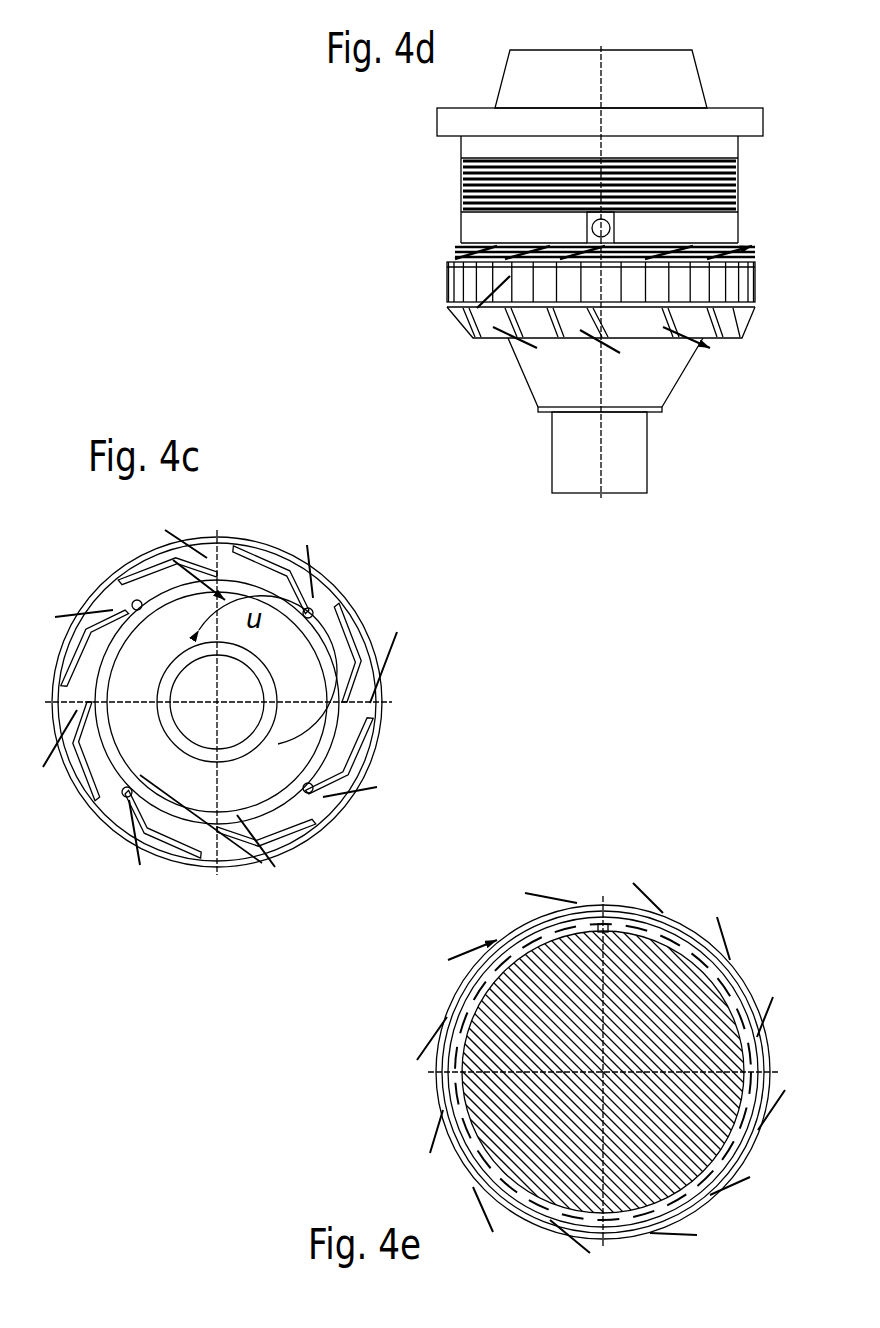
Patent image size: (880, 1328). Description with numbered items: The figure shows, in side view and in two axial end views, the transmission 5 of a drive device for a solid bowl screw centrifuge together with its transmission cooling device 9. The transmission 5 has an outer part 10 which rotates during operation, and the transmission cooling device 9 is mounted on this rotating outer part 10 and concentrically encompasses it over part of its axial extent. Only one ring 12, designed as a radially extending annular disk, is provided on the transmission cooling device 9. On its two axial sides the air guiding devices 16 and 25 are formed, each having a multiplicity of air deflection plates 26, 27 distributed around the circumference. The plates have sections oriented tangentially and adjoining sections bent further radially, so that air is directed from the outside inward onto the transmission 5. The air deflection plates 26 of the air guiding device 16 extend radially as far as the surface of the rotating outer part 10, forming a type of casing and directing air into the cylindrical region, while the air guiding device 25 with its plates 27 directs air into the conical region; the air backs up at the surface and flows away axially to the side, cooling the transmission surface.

In FIG. 4D, the transmission 5 is at (739, 222).
In FIG. 4E, the transmission 5 is at (665, 990).
In FIG. 4D, the transmission cooling device 9 is at (593, 325).
In FIG. 4D, the outer part 10 is at (738, 188).
In FIG. 4D, the ring 12 is at (755, 304).
In FIG. 4D, the air guiding device 16 is at (462, 330).
In FIG. 4E, the air guiding device 16 is at (620, 912).
In FIG. 4D, the air guiding device 25 is at (488, 340).
In FIG. 4C, the air guiding device 25 is at (306, 608).
In FIG. 4E, the air deflection plates 26 is at (480, 1160).
In FIG. 4C, the air deflection plates 27 is at (350, 663).